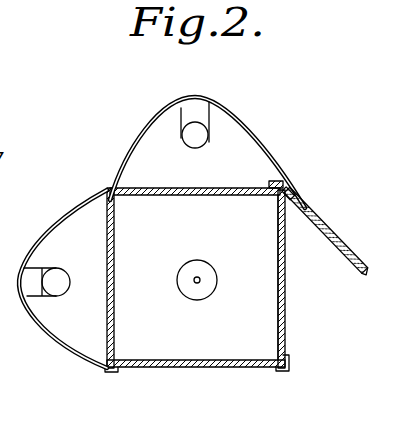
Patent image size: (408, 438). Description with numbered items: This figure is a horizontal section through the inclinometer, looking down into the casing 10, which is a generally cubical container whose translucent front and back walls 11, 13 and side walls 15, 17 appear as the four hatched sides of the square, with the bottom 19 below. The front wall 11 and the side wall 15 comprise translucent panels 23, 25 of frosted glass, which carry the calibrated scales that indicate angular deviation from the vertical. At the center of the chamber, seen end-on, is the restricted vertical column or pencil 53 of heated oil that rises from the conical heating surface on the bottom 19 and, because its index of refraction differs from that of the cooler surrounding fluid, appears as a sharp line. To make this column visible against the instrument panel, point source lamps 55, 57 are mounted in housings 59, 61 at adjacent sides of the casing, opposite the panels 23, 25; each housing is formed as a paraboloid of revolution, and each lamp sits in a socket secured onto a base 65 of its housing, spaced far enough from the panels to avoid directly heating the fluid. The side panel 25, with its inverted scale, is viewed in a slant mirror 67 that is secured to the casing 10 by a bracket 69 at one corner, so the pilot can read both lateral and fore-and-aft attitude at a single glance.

The casing 10 is at (213, 289).
The front wall 11 is at (205, 360).
The back wall 13 is at (205, 190).
The side wall 15 is at (285, 294).
The side wall 17 is at (112, 314).
The bottom 19 is at (262, 345).
The translucent panel 23 is at (163, 370).
The translucent panel 25 is at (285, 262).
The column of fluid 53 is at (199, 278).
The point source lamp 55 is at (61, 270).
The point source lamp 57 is at (191, 138).
The lamp housing 59 is at (45, 236).
The lamp housing 61 is at (246, 137).
The housing base 65 is at (212, 118).
The slant mirror 67 is at (324, 224).
The bracket 69 is at (283, 184).